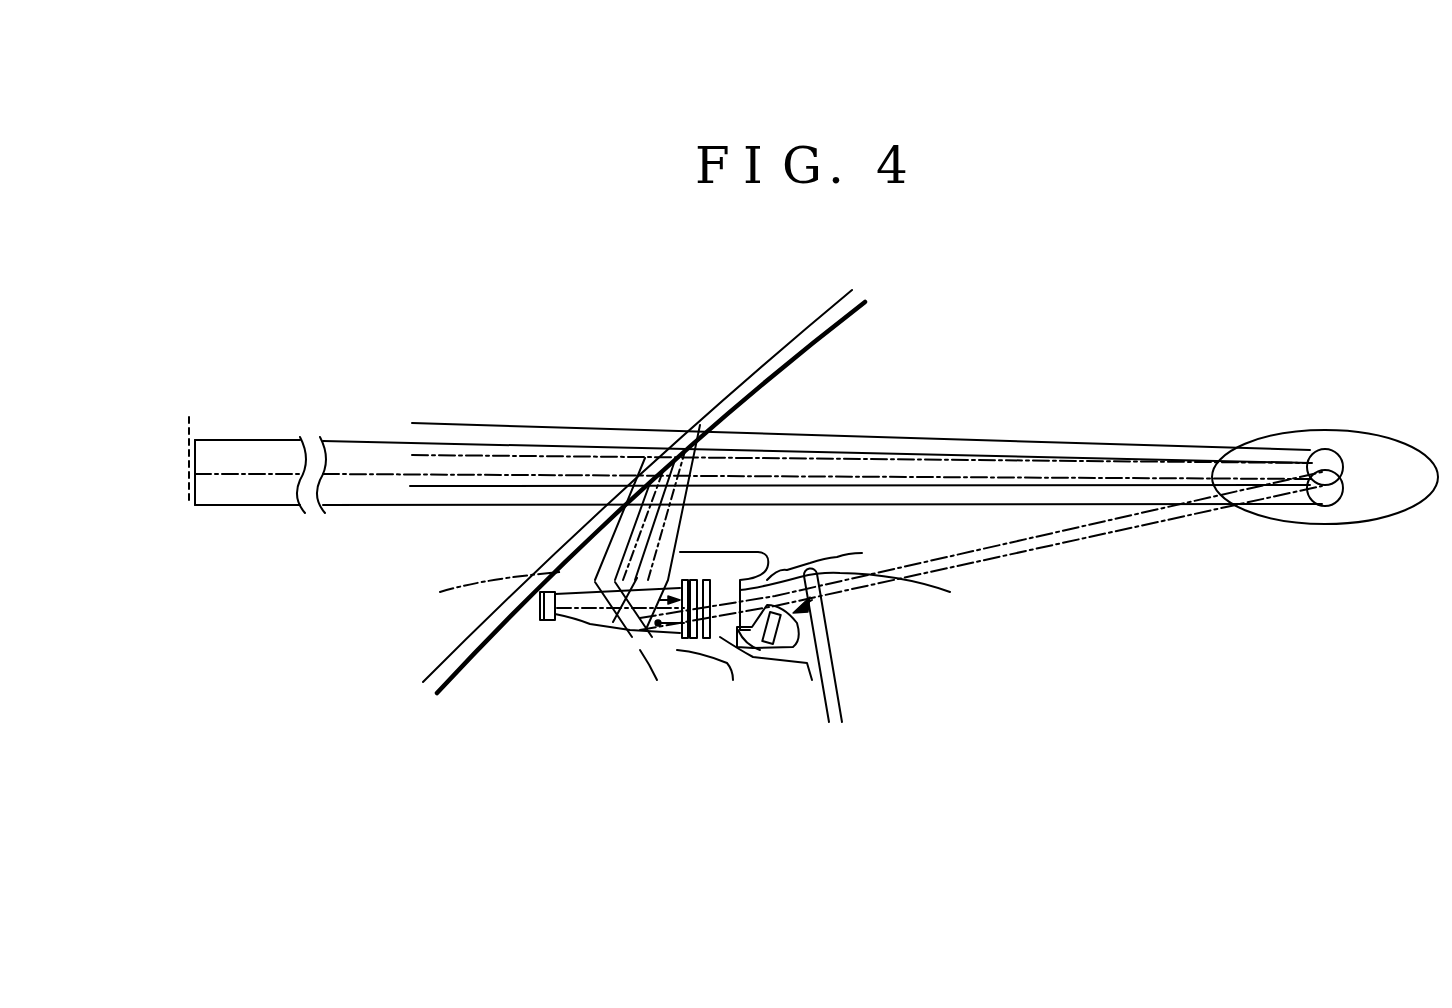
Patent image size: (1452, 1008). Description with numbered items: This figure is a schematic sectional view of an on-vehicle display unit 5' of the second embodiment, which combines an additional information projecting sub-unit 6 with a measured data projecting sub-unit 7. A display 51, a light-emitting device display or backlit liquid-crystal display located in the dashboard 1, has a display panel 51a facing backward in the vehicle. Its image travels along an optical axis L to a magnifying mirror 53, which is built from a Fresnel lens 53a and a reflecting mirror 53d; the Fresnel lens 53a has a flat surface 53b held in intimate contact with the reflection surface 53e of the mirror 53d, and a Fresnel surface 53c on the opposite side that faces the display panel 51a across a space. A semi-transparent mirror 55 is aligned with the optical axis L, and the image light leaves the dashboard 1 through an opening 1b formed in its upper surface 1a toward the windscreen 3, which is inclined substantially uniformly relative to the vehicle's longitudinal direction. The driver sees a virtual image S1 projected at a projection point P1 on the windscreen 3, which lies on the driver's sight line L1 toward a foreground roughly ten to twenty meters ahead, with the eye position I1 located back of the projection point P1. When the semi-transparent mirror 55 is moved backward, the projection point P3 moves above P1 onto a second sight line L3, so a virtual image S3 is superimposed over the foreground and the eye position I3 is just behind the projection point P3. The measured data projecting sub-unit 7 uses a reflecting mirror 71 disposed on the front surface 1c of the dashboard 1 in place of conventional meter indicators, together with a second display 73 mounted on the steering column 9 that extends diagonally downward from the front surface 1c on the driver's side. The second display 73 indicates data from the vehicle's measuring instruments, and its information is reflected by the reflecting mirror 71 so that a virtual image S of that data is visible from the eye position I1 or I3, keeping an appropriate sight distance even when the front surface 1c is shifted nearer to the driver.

The windscreen 3 is at (783, 345).
The on-vehicle display unit 5' is at (788, 447).
The sight line L3 is at (462, 455).
The sight line L1 is at (540, 473).
The projection point P3 is at (670, 445).
The projection point P1 is at (653, 467).
The virtual image S3 is at (190, 440).
The virtual image S1 is at (190, 503).
The eye position I3 is at (1330, 445).
The eye position I1 is at (1335, 507).
The opening 1b is at (600, 552).
The upper surface 1a is at (735, 553).
The dashboard 1 is at (840, 566).
The front surface 1c is at (858, 566).
The semi-transparent mirror 55 is at (546, 566).
The optical axis L is at (440, 593).
The measured data projecting sub-unit 7 is at (817, 591).
The second display 73 is at (803, 627).
The steering column 9 is at (803, 647).
The display 51 is at (541, 622).
The display panel 51a is at (555, 622).
The additional information projecting sub-unit 6 is at (602, 636).
The virtual image S is at (678, 645).
The Fresnel lens 53a is at (676, 645).
The flat surface 53b is at (743, 663).
The reflecting mirror 71 is at (733, 660).
The Fresnel surface 53c is at (680, 642).
The magnifying mirror 53 is at (700, 660).
The reflecting mirror 53d is at (727, 660).
The reflection surface 53e is at (683, 660).